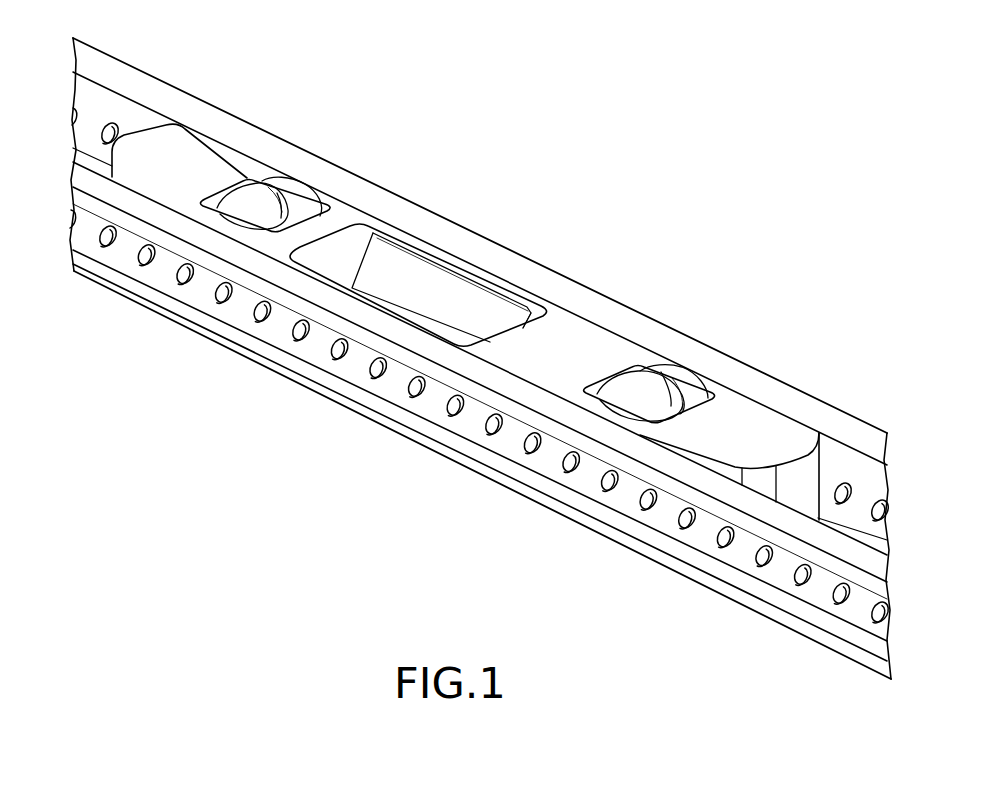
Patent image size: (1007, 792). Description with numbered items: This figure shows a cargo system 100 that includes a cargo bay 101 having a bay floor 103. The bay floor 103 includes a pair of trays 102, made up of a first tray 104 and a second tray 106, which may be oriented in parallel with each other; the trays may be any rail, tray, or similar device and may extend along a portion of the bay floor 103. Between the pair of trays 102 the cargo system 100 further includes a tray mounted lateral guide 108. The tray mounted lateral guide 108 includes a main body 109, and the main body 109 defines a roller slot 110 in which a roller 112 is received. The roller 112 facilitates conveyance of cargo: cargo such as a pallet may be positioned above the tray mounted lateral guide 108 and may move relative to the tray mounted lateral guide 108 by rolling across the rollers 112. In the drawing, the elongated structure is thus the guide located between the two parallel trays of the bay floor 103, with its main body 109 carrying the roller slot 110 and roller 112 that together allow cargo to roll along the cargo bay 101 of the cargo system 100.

The cargo system 100 is at (525, 37).
The cargo bay 101 is at (529, 103).
The pair of trays 102 is at (884, 423).
The bay floor 103 is at (328, 400).
The first tray 104 is at (878, 444).
The second tray 106 is at (878, 571).
The tray mounted lateral guide 108 is at (572, 334).
The main body 109 is at (521, 355).
The roller slot 110 is at (253, 186).
The roller 112 is at (257, 212).